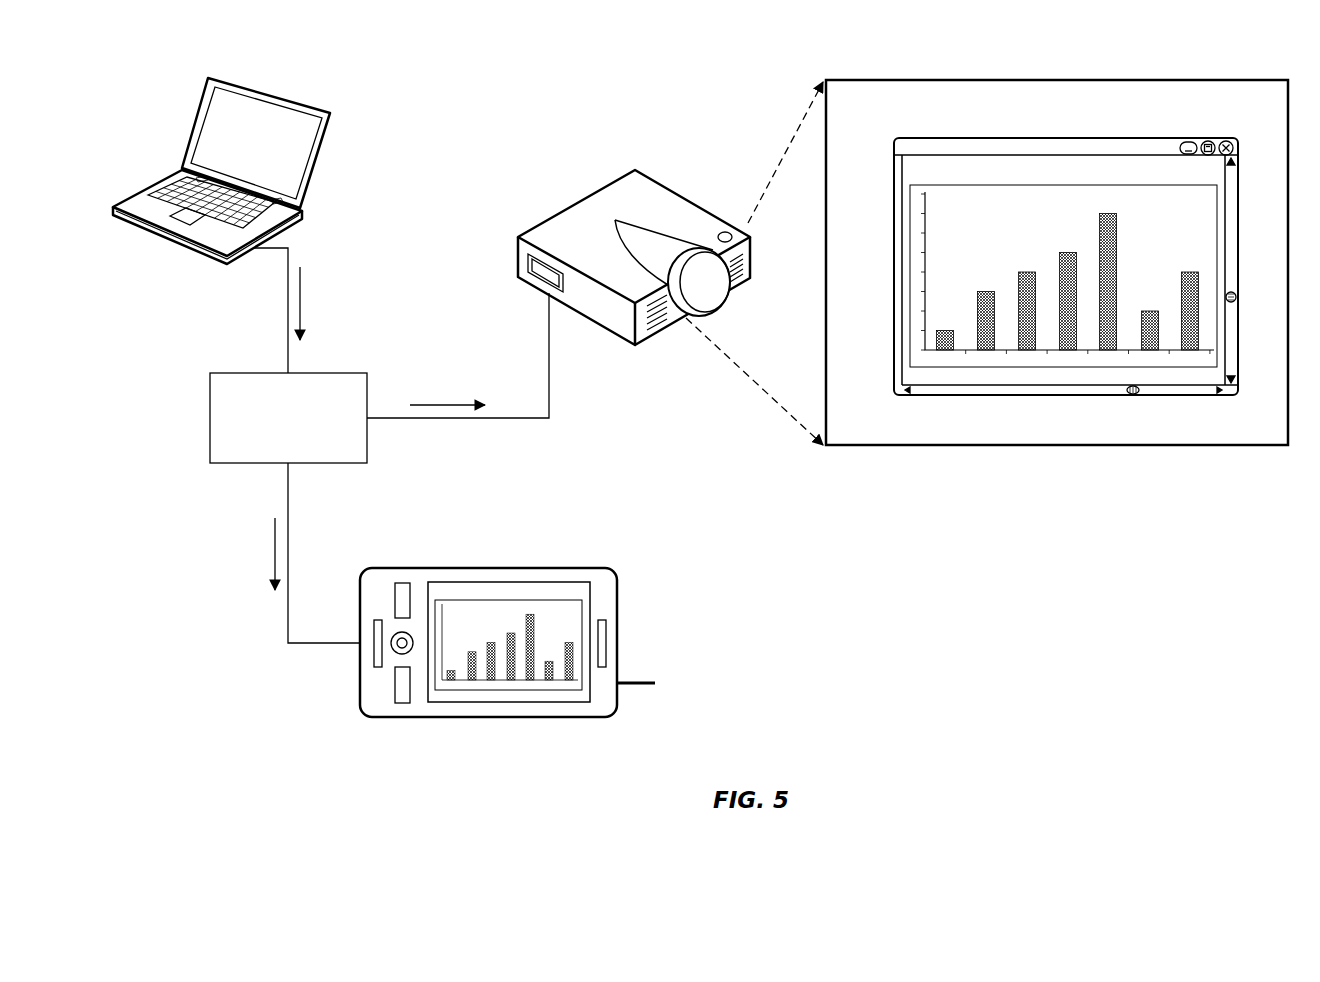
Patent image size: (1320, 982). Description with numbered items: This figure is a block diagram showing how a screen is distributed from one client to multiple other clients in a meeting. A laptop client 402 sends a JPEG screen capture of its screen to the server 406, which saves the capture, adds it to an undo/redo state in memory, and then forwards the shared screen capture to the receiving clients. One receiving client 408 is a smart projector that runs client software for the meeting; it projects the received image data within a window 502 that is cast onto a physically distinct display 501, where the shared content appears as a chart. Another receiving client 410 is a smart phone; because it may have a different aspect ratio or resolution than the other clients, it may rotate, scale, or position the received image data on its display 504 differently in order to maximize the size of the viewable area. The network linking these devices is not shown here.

The client 402 is at (206, 258).
The server 406 is at (273, 447).
The client 408 is at (617, 345).
The client 410 is at (507, 653).
The display 501 is at (883, 447).
The window 502 is at (895, 360).
The display 504 is at (570, 600).